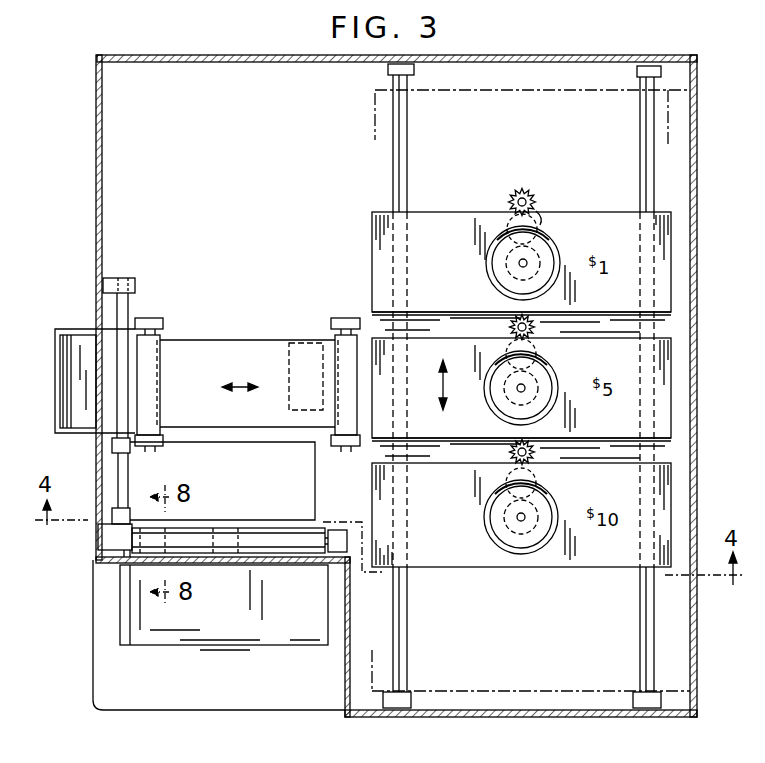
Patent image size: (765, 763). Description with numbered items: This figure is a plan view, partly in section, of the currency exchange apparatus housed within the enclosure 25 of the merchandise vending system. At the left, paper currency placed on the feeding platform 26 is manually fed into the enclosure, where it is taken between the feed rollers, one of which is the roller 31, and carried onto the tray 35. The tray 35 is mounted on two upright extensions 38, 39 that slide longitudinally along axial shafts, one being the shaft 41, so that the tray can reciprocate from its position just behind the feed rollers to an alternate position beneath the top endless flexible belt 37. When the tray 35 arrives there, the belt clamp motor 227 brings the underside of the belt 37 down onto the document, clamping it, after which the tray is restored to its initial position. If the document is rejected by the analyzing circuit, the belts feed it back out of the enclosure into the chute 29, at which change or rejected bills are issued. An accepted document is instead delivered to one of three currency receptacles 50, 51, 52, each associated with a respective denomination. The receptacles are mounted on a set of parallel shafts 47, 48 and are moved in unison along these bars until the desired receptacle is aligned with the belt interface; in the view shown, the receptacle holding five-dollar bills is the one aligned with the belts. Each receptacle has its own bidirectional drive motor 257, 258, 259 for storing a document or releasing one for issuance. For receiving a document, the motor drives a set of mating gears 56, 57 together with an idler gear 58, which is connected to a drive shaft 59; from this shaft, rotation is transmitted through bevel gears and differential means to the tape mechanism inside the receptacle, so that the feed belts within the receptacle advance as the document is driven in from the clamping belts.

The enclosure 25 is at (350, 718).
The feeding platform 26 is at (232, 621).
The chute 29 is at (57, 370).
The feed roller 31 is at (276, 527).
The tray 35 is at (282, 488).
The endless flexible belt 37 is at (209, 371).
The upright extension 38 is at (112, 512).
The upright extension 39 is at (112, 443).
The axial shaft 41 is at (117, 310).
The parallel shaft 47 is at (409, 135).
The parallel shaft 48 is at (640, 135).
The currency receptacle 50 is at (454, 271).
The currency receptacle 51 is at (432, 396).
The currency receptacle 52 is at (446, 524).
The mating gear 56 is at (505, 263).
The mating gear 57 is at (540, 216).
The idler gear 58 is at (534, 196).
The drive shaft 59 is at (520, 196).
The belt clamp motor 227 is at (290, 348).
The bidirectional drive motor 257 is at (551, 244).
The bidirectional drive motor 258 is at (551, 370).
The bidirectional drive motor 259 is at (551, 499).